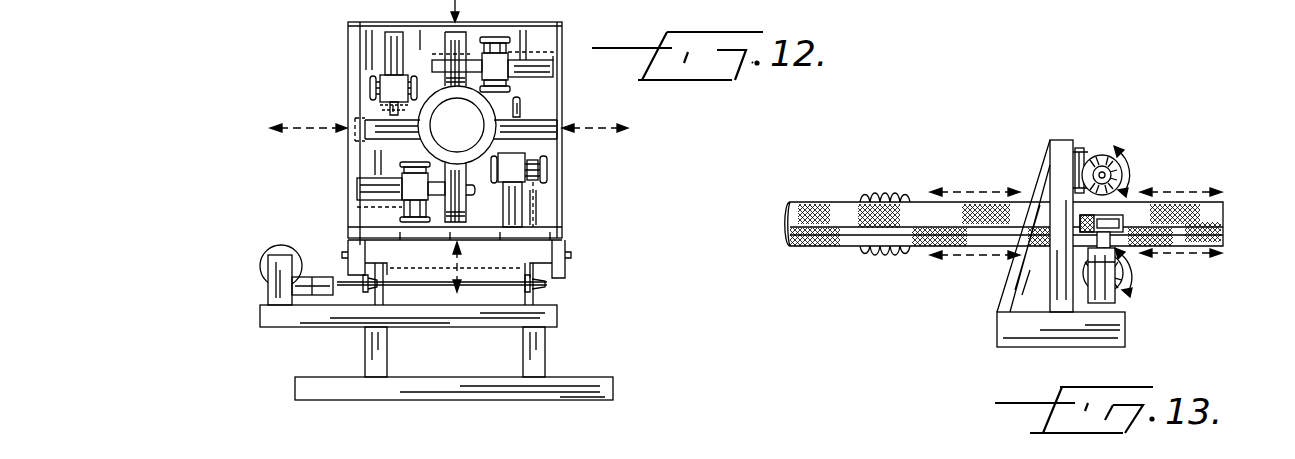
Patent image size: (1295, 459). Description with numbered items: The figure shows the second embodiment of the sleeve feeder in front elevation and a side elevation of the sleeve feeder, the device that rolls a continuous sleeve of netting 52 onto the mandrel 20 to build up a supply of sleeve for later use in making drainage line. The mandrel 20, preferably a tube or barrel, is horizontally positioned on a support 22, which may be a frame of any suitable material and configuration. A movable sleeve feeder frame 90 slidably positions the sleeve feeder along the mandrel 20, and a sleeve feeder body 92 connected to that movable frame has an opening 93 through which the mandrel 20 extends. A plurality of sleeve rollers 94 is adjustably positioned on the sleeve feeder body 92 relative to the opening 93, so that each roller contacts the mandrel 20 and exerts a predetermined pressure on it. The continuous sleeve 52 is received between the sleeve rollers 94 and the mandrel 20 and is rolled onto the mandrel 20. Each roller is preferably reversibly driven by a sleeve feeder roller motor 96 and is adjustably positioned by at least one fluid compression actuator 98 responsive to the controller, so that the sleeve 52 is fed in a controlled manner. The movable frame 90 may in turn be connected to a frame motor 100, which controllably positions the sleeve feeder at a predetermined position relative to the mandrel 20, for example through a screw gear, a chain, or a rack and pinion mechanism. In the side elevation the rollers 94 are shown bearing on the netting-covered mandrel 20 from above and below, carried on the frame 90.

In FIG. 12, the mandrel 20 is at (430, 143).
In FIG. 12, the support 22 is at (550, 355).
In FIG. 13, the continuous sleeve of netting 52 is at (893, 192).
In FIG. 12, the movable sleeve feeder frame 90 is at (560, 252).
In FIG. 13, the movable sleeve feeder frame 90 is at (1128, 330).
In FIG. 12, the sleeve feeder body 92 is at (562, 24).
In FIG. 12, the opening 93 is at (395, 110).
In FIG. 12, the sleeve rollers 94 is at (517, 117).
In FIG. 13, the sleeve rollers 94 is at (1098, 150).
In FIG. 12, the sleeve feeder roller motor 96 is at (552, 170).
In FIG. 12, the fluid compression actuator 98 is at (522, 210).
In FIG. 12, the frame motor 100 is at (268, 297).